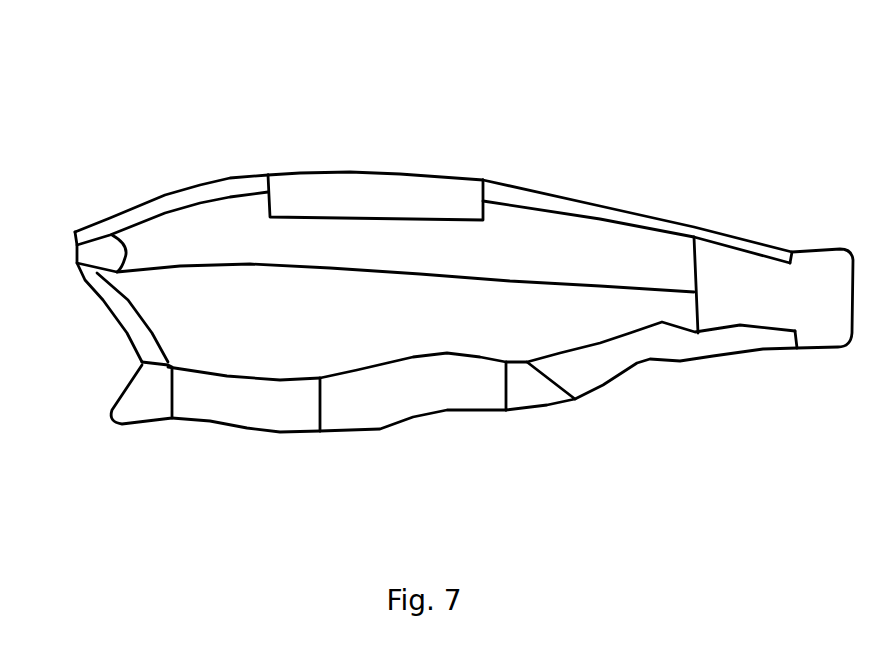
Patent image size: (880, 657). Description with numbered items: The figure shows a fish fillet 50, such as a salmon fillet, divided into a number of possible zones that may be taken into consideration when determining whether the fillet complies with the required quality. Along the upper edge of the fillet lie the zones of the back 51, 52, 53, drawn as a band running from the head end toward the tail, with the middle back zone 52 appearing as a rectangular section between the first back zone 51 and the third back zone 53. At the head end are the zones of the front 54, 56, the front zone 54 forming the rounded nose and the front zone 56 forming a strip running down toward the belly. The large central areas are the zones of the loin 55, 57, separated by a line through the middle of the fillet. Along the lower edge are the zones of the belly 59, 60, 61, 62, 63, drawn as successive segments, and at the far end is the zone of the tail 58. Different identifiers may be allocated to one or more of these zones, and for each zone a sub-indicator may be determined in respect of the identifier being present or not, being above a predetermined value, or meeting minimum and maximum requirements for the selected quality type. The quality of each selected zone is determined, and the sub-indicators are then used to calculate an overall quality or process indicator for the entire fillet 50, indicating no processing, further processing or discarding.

The orthosis assembly 50 is at (160, 72).
The back zone 51 is at (165, 202).
The back zone 52 is at (372, 202).
The back zone 53 is at (620, 208).
The front zone 54 is at (100, 253).
The loin zone 55 is at (195, 246).
The front zone 56 is at (120, 317).
The loin zone 57 is at (226, 340).
The tail zone 58 is at (746, 310).
The belly zone 59 is at (148, 400).
The belly zone 60 is at (242, 400).
The belly zone 61 is at (420, 400).
The belly zone 62 is at (528, 387).
The belly zone 63 is at (665, 343).